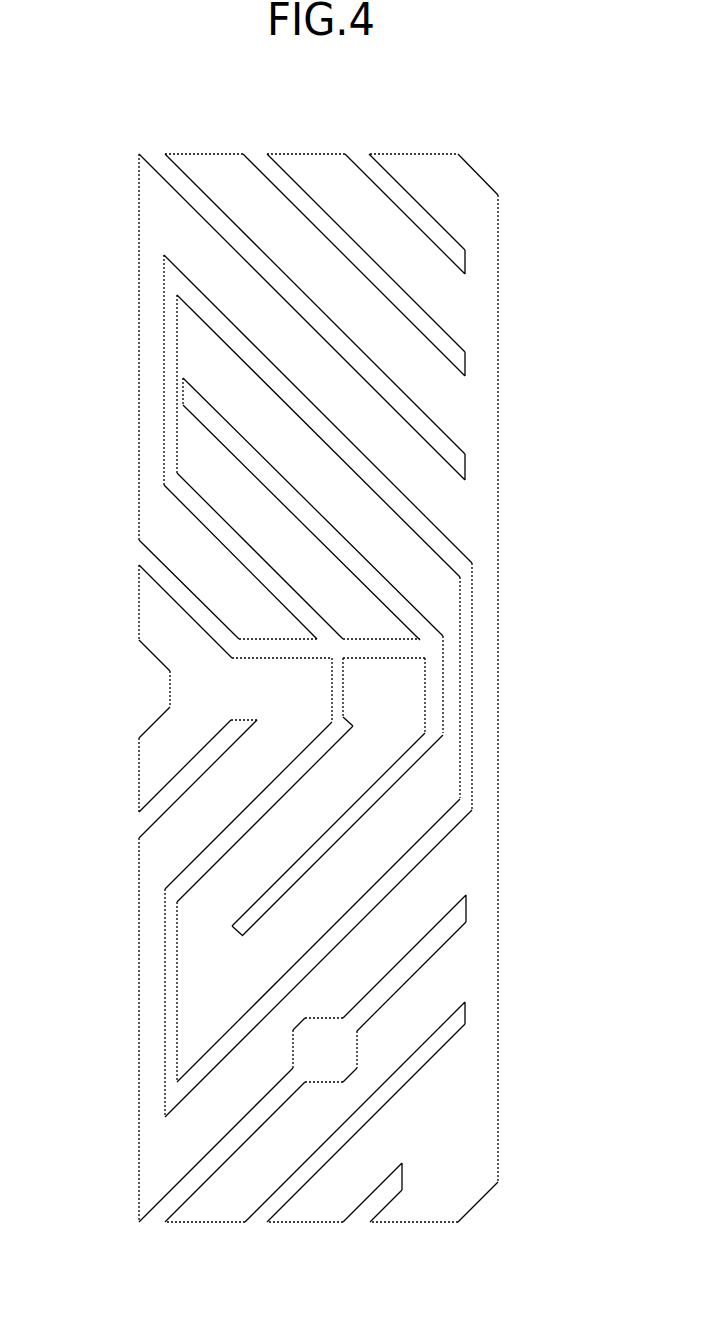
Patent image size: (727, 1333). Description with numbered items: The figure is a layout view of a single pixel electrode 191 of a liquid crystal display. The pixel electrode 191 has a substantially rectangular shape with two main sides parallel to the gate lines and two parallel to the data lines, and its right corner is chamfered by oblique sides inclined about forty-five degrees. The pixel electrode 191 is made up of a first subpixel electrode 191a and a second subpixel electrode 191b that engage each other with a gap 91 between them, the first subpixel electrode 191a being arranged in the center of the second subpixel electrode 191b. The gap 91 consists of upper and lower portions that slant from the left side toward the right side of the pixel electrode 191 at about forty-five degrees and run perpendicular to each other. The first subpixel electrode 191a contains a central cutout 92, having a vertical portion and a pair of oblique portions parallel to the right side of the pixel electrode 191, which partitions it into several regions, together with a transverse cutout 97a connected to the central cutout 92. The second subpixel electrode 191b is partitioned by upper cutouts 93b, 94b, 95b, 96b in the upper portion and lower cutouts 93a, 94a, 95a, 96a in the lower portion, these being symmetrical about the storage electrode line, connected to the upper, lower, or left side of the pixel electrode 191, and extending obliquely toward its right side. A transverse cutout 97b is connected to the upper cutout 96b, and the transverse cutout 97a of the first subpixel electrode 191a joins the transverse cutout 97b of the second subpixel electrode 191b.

The gap 91 is at (394, 512).
The central cutout 92 is at (413, 627).
The lower cutout 93a is at (390, 1200).
The upper cutout 93b is at (433, 242).
The lower cutout 94a is at (403, 1085).
The upper cutout 94b is at (415, 323).
The lower cutout 95a is at (413, 977).
The upper cutout 95b is at (395, 408).
The lower cutout 96a is at (183, 794).
The upper cutout 96b is at (188, 615).
The transverse cutout 97a is at (370, 659).
The transverse cutout 97b is at (275, 660).
The pixel electrode 191 is at (607, 532).
The first subpixel electrode 191a is at (470, 594).
The second subpixel electrode 191b is at (505, 531).